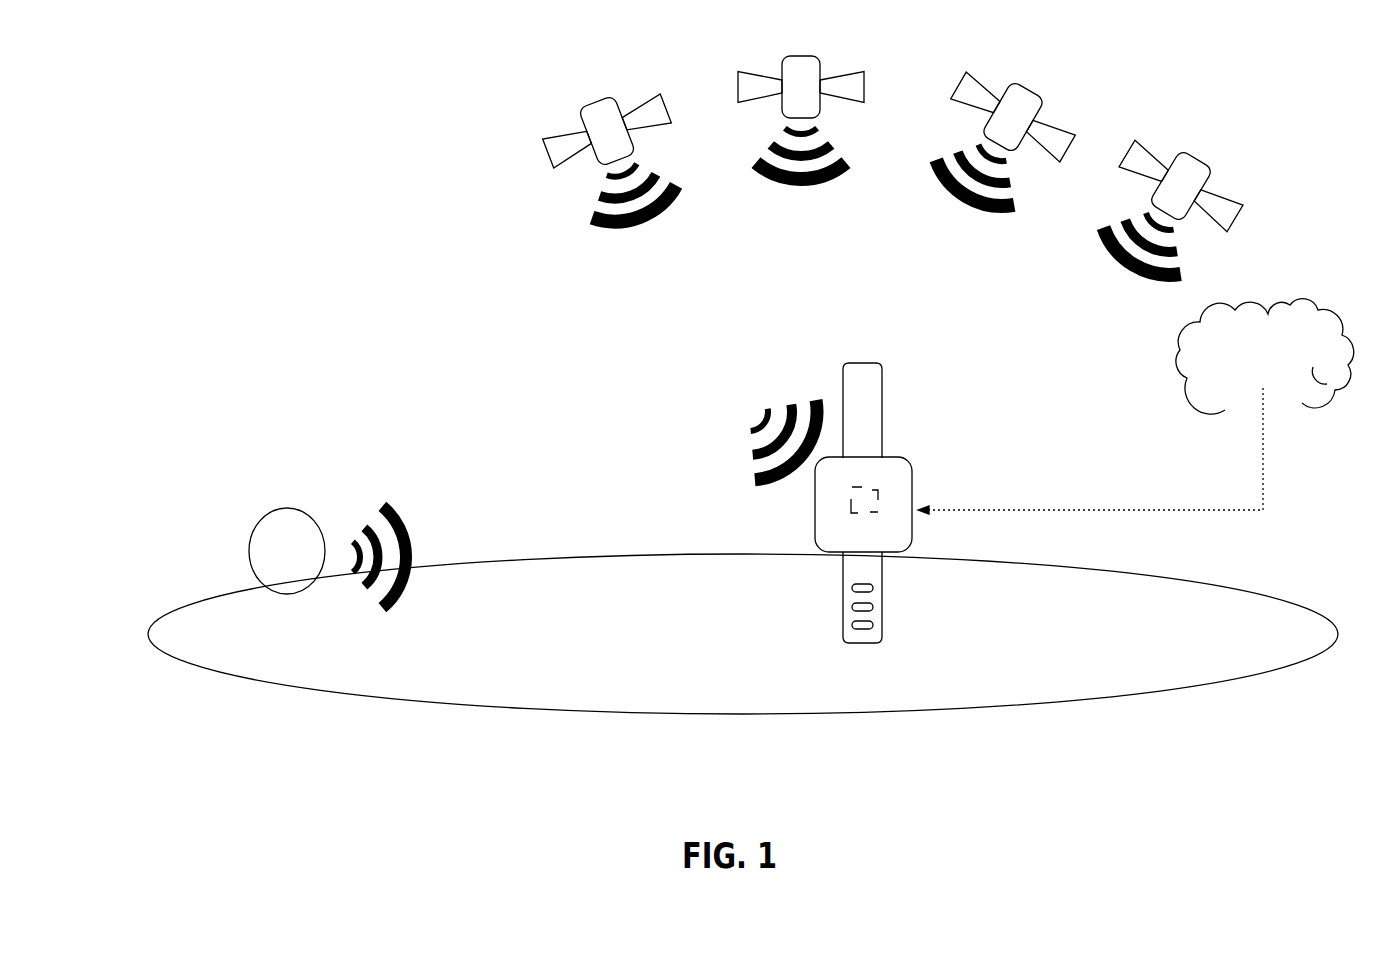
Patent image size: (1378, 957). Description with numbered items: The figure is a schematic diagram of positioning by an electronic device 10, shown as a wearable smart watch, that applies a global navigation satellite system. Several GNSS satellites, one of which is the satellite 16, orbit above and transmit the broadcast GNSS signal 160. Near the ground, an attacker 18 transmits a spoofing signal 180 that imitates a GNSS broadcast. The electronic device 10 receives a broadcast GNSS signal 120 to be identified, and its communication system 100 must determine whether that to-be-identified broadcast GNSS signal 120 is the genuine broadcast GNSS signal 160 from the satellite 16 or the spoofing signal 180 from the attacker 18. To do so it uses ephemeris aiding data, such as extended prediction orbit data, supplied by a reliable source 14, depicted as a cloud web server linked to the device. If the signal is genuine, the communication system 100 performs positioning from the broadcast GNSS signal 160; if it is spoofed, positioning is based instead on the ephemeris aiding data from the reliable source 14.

The electronic device 10 is at (904, 458).
The communication system 100 is at (877, 494).
The broadcast GNSS signal to be identified 120 is at (755, 430).
The reliable source 14 is at (1290, 312).
The satellite 16 is at (1204, 163).
The broadcast GNSS signal 160 is at (1186, 273).
The attacker 18 is at (293, 509).
The spoofing signal 180 is at (412, 519).